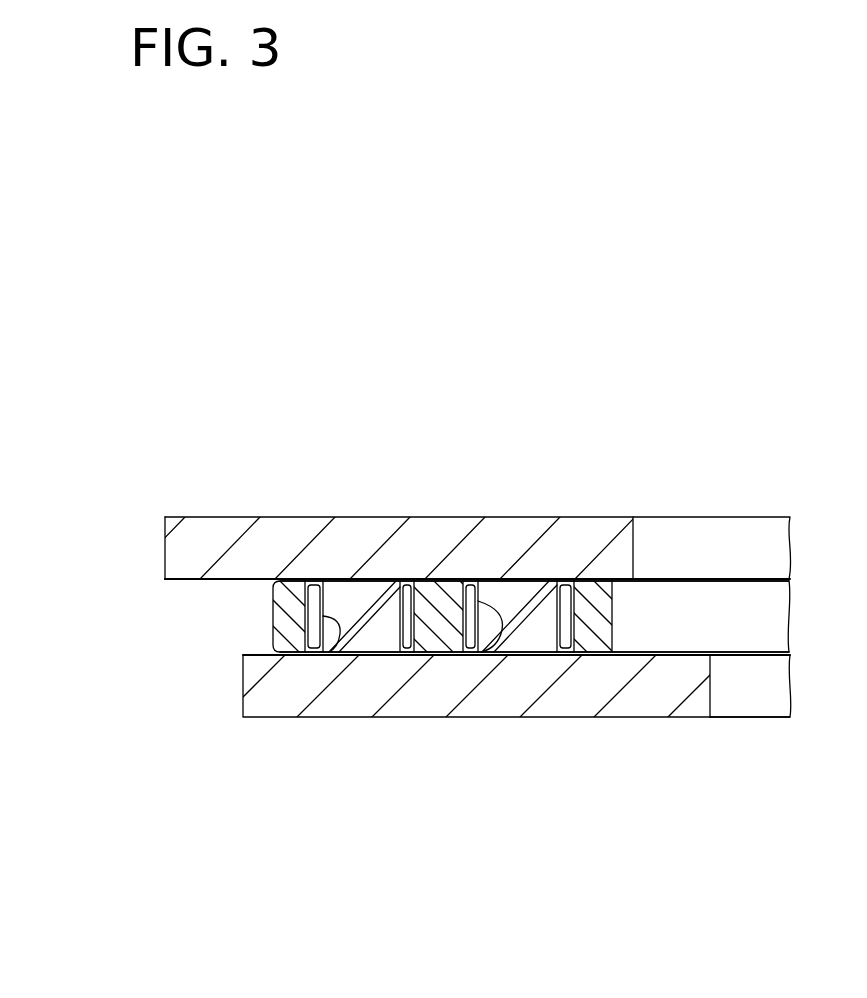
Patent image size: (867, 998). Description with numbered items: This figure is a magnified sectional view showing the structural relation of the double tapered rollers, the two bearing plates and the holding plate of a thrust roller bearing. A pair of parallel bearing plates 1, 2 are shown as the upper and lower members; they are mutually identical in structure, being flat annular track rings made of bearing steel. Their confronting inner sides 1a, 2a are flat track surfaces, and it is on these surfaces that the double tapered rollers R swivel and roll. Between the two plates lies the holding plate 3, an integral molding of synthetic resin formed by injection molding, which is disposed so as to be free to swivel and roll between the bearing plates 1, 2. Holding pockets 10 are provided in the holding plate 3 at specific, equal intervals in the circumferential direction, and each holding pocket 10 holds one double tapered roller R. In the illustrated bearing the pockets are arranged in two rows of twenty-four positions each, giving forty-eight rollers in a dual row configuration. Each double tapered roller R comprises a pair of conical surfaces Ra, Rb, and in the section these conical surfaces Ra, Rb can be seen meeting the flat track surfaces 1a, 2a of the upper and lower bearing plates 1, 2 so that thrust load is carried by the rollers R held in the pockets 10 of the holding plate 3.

The bearing plate 1 is at (283, 515).
The inner side of bearing plate 1a is at (183, 580).
The bearing plate 2 is at (348, 697).
The inner side of bearing plate 2a is at (693, 653).
The holding plate 3 is at (592, 615).
The holding pocket 10 is at (317, 652).
The double tapered roller R is at (348, 577).
The conical surface Ra is at (311, 621).
The conical surface Rb is at (380, 638).